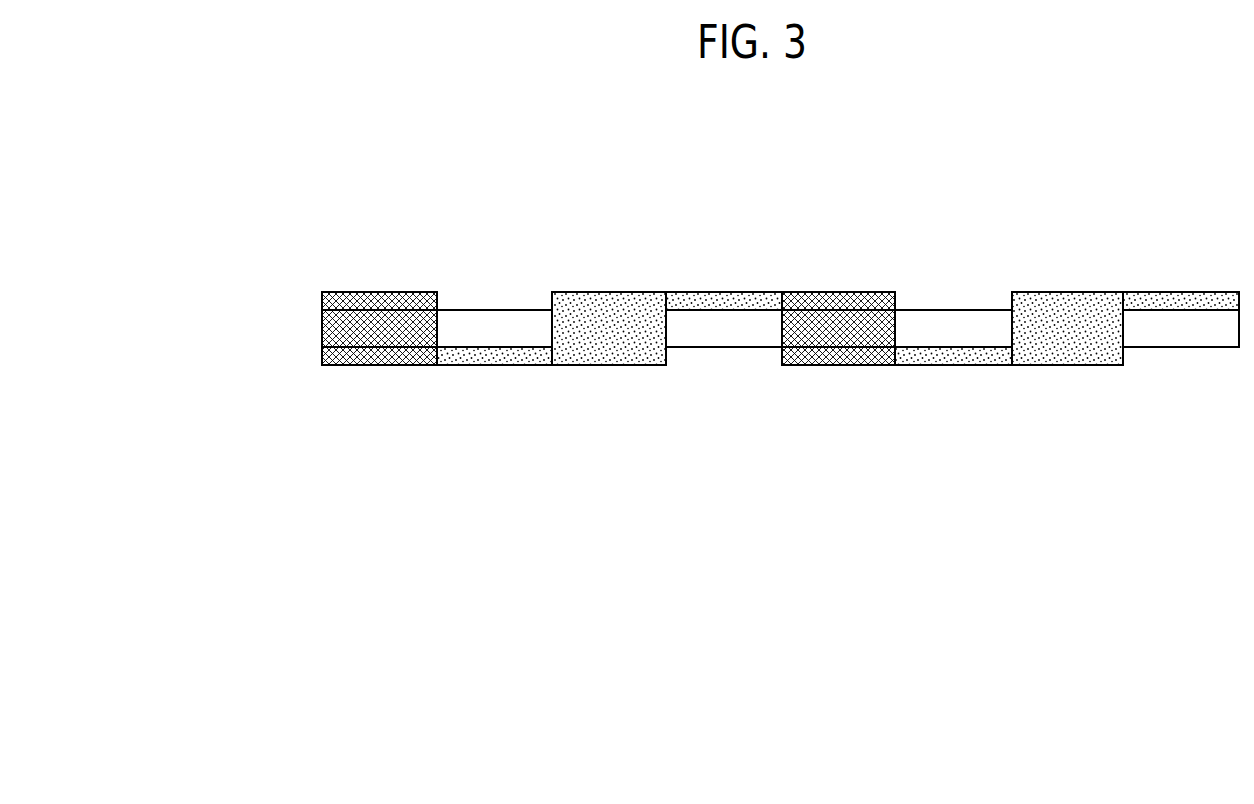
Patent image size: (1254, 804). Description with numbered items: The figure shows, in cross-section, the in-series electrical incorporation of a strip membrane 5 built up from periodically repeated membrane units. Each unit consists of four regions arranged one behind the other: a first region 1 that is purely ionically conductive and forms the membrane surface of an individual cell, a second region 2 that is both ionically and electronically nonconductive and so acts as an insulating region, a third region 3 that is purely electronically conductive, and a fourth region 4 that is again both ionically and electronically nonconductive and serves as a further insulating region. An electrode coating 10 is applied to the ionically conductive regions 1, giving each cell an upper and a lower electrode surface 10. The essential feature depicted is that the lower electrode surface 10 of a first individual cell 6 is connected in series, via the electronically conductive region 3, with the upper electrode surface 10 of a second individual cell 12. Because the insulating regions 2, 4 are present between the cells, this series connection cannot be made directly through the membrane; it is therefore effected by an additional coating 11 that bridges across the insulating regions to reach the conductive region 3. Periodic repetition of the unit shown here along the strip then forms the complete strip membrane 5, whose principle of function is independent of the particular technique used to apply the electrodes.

The first region 1 is at (388, 330).
The second region 2 is at (519, 332).
The third region 3 is at (666, 330).
The fourth region 4 is at (773, 333).
The strip membrane 5 is at (720, 533).
The first individual cell 6 is at (380, 253).
The electrode surface 10 is at (322, 354).
The additional coating 11 is at (490, 347).
The second individual cell 12 is at (843, 253).